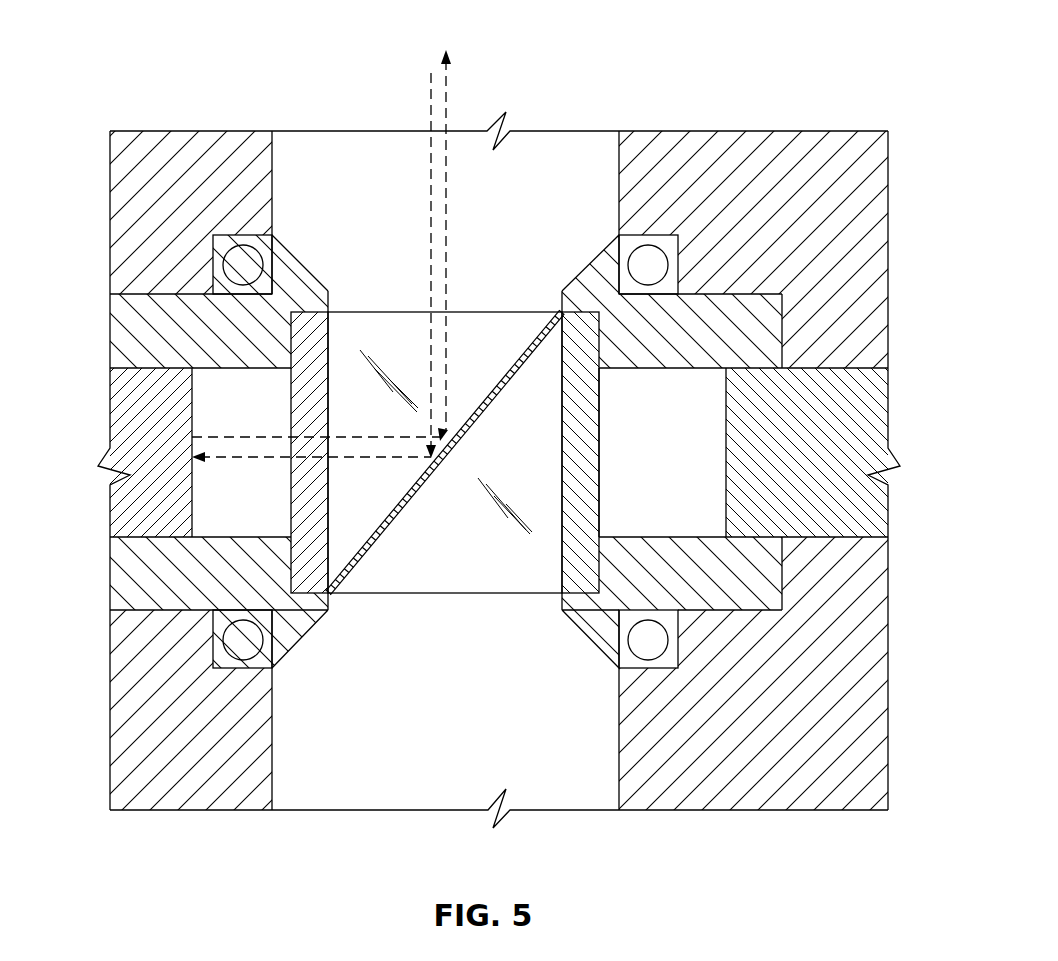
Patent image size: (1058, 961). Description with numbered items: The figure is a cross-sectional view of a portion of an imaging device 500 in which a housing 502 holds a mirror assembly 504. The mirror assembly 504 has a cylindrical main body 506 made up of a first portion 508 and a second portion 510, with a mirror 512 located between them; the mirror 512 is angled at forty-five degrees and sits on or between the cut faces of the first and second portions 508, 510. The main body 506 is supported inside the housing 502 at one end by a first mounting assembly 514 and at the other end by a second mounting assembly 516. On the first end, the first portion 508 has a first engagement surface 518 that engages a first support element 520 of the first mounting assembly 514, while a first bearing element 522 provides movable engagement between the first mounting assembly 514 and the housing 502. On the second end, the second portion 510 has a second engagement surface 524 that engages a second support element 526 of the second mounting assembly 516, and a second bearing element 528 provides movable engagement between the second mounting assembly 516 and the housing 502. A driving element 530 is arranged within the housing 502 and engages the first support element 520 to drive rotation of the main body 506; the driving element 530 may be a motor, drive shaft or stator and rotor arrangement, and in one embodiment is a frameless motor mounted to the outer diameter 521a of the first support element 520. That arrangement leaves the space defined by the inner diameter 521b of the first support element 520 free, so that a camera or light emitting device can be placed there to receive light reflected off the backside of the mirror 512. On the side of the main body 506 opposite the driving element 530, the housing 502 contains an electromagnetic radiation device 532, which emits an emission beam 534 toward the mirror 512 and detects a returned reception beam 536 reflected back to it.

The imaging device 500 is at (775, 31).
The housing 502 is at (202, 143).
The mirror assembly 504 is at (541, 168).
The main body 506 is at (515, 610).
The first portion 508 is at (482, 582).
The second portion 510 is at (387, 328).
The mirror 512 is at (338, 598).
The first mounting assembly 514 is at (569, 267).
The second mounting assembly 516 is at (324, 268).
The first engagement surface 518 is at (585, 412).
The first support element 520 is at (600, 625).
The outer diameter 521a is at (746, 619).
The inner diameter 521b is at (706, 376).
The first bearing element 522 is at (650, 257).
The second engagement surface 524 is at (302, 507).
The second support element 526 is at (297, 625).
The second bearing element 528 is at (238, 257).
The driving element 530 is at (876, 394).
The electromagnetic radiation device 532 is at (128, 413).
The emission beam 534 is at (446, 90).
The reception beam 536 is at (431, 90).